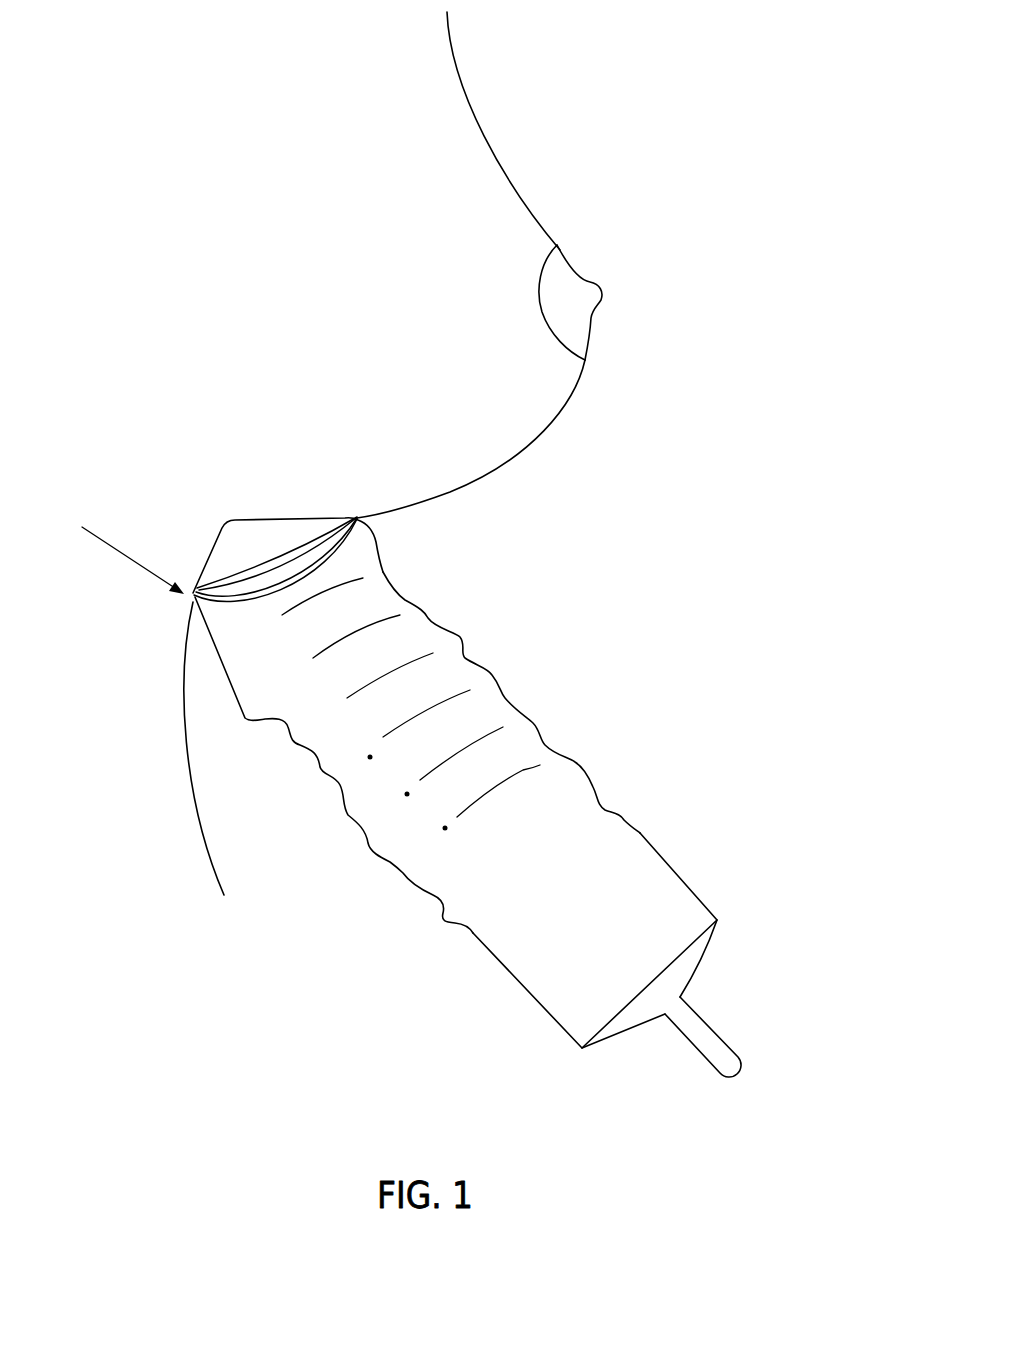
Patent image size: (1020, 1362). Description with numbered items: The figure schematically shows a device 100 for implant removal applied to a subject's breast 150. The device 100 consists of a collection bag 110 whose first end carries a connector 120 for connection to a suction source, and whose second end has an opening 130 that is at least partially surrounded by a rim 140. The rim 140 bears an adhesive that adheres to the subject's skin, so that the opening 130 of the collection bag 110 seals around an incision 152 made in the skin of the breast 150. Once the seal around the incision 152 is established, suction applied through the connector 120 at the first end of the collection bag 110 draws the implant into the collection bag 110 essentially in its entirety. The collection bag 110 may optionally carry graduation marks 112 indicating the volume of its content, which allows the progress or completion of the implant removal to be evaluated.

The device for implant removal 100 is at (592, 661).
The collection bag 110 is at (670, 865).
The graduation marks 112 is at (527, 773).
The connector 120 is at (692, 1032).
The opening 130 is at (297, 570).
The rim 140 is at (290, 583).
The breast 150 is at (485, 142).
The incision 152 is at (250, 520).